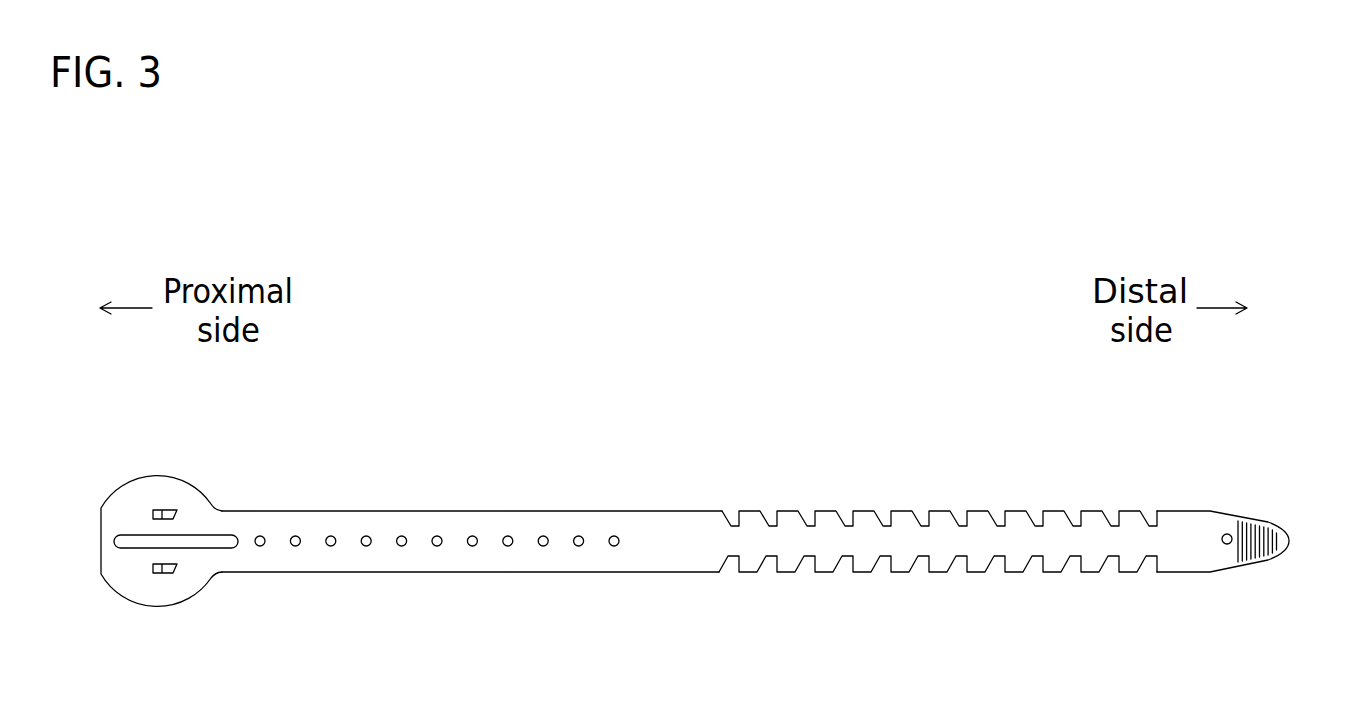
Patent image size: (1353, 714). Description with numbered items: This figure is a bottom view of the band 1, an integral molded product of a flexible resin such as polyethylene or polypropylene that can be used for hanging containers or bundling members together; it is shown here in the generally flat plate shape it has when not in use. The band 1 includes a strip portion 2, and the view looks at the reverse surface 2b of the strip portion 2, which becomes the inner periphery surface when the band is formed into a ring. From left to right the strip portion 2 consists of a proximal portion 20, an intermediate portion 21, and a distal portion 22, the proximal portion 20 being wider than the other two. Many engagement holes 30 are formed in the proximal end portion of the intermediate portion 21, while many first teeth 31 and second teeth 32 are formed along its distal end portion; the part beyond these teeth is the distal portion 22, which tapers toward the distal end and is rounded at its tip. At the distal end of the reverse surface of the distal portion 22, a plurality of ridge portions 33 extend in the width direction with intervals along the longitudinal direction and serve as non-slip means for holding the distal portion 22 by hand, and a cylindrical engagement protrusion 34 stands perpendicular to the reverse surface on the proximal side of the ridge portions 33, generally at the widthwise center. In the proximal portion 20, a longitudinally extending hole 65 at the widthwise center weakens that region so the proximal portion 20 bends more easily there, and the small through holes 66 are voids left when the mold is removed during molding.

The band 1 is at (390, 405).
The strip portion 2 is at (617, 502).
The reverse surface 2b is at (561, 538).
The proximal portion 20 is at (160, 478).
The intermediate portion 21 is at (665, 511).
The distal portion 22 is at (1178, 511).
The engagement holes 30 is at (366, 547).
The first teeth 31 is at (785, 572).
The second teeth 32 is at (785, 511).
The ridge portions 33 is at (1278, 539).
The engagement protrusion 34 is at (1229, 533).
The hole 65 is at (220, 548).
The through holes 66 is at (153, 519).